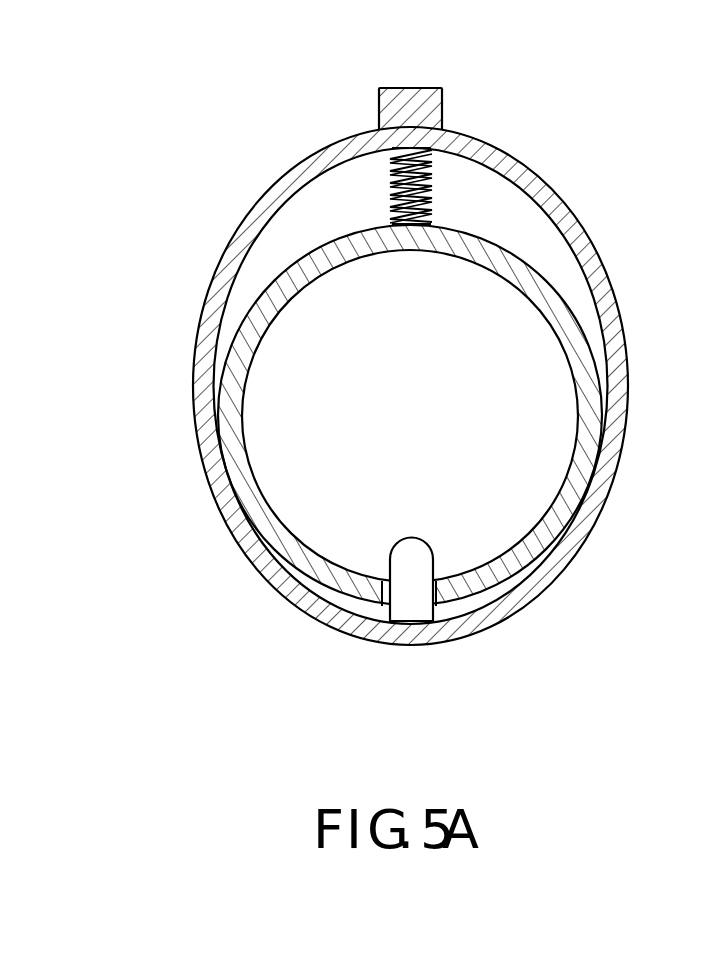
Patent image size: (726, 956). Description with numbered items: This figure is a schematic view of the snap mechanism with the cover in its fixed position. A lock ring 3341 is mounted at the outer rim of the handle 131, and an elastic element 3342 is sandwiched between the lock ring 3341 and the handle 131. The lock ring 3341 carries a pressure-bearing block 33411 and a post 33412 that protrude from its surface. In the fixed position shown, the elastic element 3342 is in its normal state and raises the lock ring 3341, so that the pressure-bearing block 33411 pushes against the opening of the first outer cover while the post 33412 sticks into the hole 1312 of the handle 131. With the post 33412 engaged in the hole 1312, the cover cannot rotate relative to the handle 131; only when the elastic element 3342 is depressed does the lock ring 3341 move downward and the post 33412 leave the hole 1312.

The lock ring 3341 is at (288, 192).
The pressure-bearing block 33411 is at (414, 97).
The post 33412 is at (411, 565).
The elastic element 3342 is at (432, 160).
The handle 131 is at (546, 303).
The hole 1312 is at (380, 600).